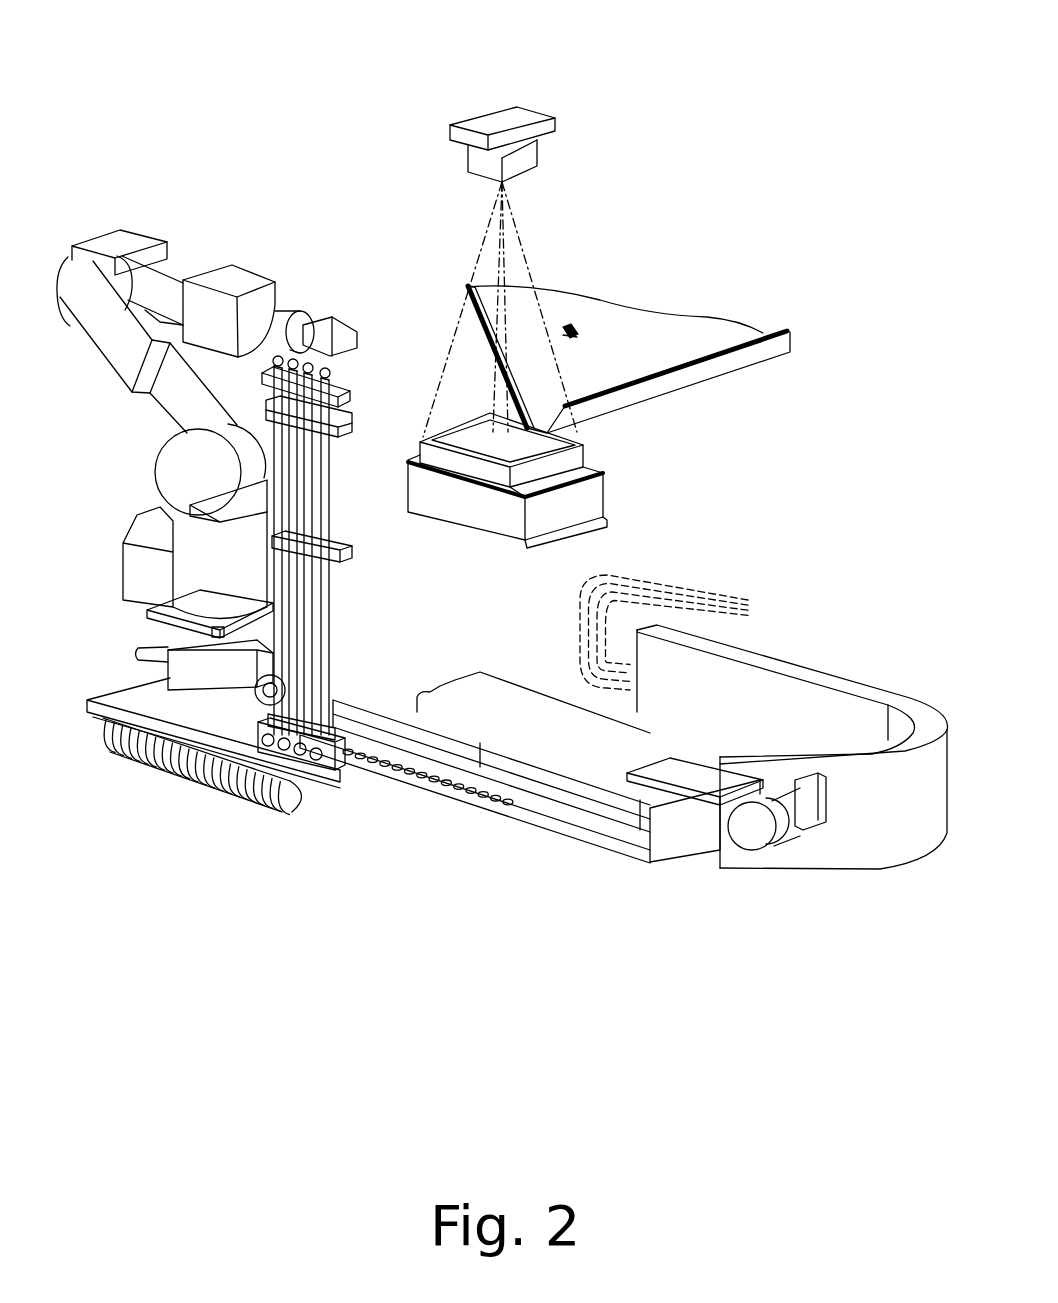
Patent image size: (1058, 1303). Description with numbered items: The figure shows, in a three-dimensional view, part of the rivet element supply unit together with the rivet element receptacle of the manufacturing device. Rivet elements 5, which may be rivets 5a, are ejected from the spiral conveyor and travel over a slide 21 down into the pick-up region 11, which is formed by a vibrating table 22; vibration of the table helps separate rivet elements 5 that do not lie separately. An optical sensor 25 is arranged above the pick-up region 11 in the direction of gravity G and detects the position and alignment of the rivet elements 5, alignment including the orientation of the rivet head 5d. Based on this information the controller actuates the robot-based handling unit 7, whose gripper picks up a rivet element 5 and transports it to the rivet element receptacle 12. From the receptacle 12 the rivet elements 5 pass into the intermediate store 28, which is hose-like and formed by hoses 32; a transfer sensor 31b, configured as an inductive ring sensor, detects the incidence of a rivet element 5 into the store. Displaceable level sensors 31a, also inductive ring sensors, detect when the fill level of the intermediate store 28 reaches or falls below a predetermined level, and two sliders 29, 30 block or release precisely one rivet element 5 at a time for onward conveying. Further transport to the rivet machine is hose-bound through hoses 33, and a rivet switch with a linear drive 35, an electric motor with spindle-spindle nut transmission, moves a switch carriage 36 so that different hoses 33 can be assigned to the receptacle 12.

The rivet element 5 is at (572, 335).
The rivet 5a is at (468, 286).
The rivet head 5d is at (573, 343).
The handling unit 7 is at (147, 218).
The pick-up region 11 is at (467, 405).
The rivet element receptacle 12 is at (350, 388).
The slide 21 is at (673, 337).
The vibrating table 22 is at (628, 482).
The optical sensor 25 is at (533, 155).
The intermediate store 28 is at (300, 637).
The slider 29 is at (345, 797).
The slider 30 is at (352, 733).
The level sensor 31a is at (348, 437).
The transfer sensor 31b is at (347, 412).
The hose 32 is at (301, 373).
The hose 33 is at (712, 597).
The linear drive 35 is at (793, 840).
The switch carriage 36 is at (130, 770).
The direction of gravity G is at (832, 1112).